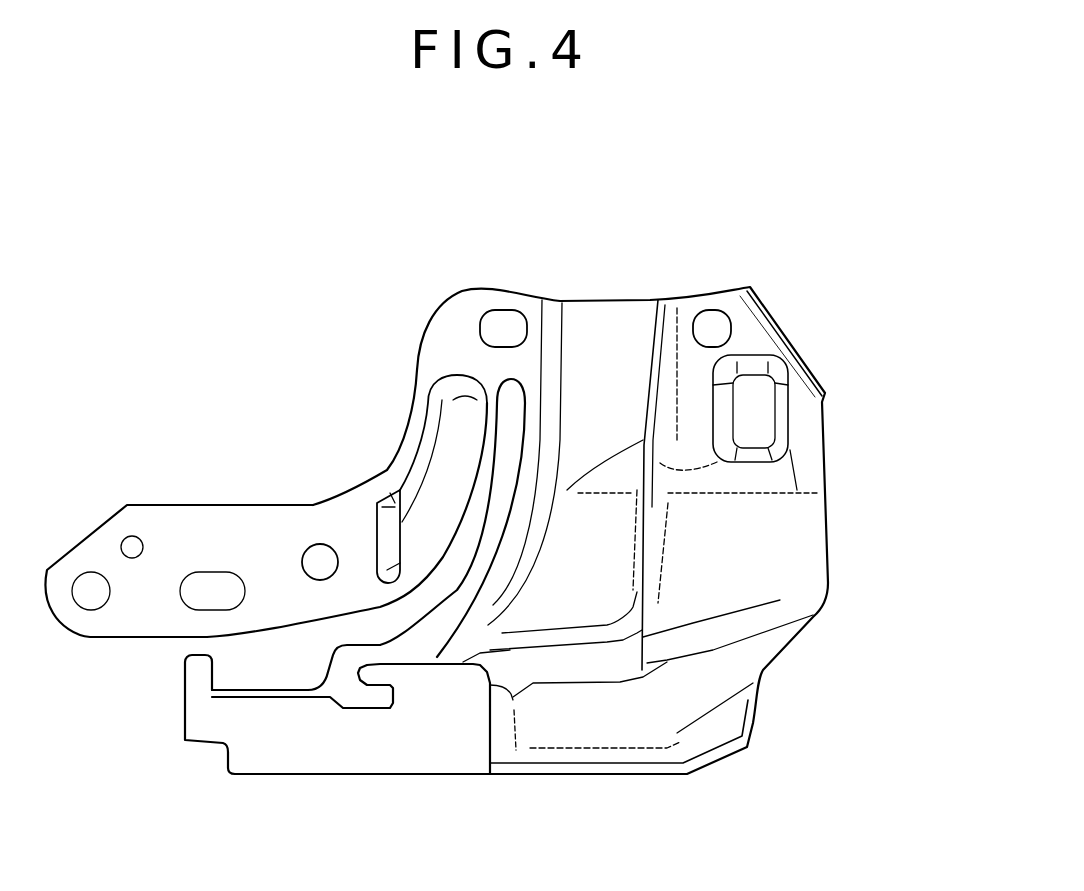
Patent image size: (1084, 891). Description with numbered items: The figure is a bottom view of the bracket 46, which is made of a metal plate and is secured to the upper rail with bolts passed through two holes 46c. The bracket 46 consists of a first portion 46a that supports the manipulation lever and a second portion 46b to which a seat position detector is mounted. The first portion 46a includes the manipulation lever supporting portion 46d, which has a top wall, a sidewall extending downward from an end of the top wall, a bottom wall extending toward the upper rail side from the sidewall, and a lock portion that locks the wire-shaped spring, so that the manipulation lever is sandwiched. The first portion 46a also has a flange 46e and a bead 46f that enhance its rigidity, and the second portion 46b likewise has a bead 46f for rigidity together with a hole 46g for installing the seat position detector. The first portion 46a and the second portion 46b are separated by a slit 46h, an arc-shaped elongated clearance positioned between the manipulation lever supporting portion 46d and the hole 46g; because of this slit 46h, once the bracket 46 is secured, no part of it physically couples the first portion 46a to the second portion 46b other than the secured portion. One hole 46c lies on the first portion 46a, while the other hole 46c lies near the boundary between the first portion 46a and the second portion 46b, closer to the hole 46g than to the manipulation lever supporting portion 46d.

The bracket 46 is at (517, 153).
The first portion 46a is at (843, 542).
The second portion 46b is at (215, 506).
The hole 46c is at (502, 320).
The manipulation lever supporting portion 46d is at (335, 757).
The flange 46e is at (787, 346).
The bead 46f is at (555, 308).
The hole 46g is at (317, 557).
The slit 46h is at (513, 420).